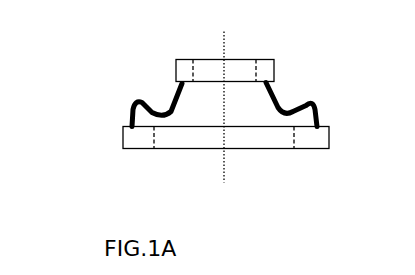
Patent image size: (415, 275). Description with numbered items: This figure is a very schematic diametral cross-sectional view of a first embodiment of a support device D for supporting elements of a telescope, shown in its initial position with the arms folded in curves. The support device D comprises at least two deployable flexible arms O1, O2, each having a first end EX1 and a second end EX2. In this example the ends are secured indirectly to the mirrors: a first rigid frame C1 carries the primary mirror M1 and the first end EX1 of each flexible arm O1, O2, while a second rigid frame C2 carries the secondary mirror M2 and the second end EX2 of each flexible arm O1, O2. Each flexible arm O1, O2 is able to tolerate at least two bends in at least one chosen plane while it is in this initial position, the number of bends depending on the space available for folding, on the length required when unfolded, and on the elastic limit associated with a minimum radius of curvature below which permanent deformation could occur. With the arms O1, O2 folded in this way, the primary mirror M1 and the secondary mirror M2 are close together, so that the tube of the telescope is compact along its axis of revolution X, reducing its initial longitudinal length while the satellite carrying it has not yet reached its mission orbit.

The support device D is at (203, 102).
The primary mirror M1 is at (260, 150).
The secondary mirror M2 is at (237, 60).
The first rigid frame C1 is at (133, 150).
The second rigid frame C2 is at (175, 62).
The deployable flexible arm O1 is at (130, 108).
The deployable flexible arm O2 is at (315, 103).
The first end EX1 is at (123, 120).
The second end EX2 is at (170, 90).
The axis of revolution X is at (223, 27).